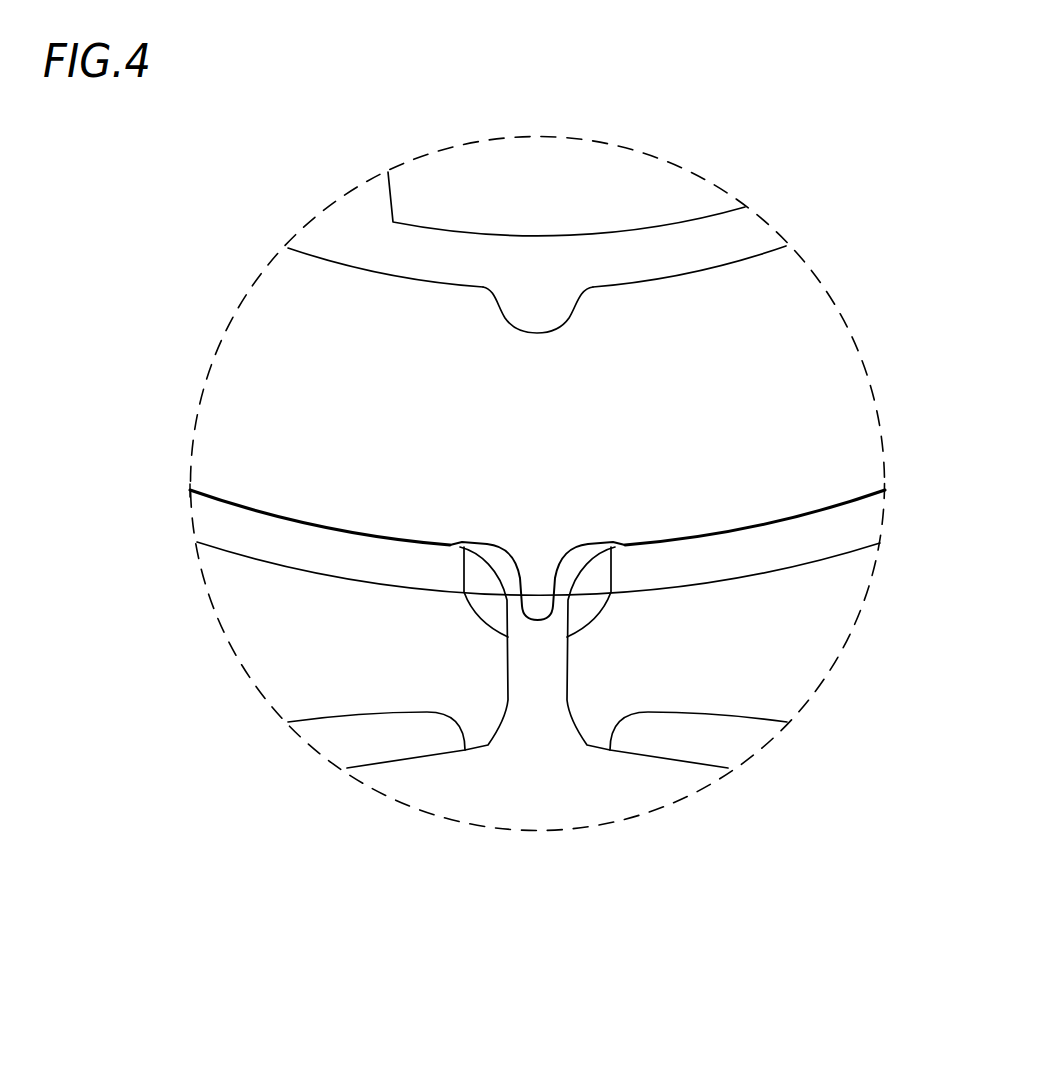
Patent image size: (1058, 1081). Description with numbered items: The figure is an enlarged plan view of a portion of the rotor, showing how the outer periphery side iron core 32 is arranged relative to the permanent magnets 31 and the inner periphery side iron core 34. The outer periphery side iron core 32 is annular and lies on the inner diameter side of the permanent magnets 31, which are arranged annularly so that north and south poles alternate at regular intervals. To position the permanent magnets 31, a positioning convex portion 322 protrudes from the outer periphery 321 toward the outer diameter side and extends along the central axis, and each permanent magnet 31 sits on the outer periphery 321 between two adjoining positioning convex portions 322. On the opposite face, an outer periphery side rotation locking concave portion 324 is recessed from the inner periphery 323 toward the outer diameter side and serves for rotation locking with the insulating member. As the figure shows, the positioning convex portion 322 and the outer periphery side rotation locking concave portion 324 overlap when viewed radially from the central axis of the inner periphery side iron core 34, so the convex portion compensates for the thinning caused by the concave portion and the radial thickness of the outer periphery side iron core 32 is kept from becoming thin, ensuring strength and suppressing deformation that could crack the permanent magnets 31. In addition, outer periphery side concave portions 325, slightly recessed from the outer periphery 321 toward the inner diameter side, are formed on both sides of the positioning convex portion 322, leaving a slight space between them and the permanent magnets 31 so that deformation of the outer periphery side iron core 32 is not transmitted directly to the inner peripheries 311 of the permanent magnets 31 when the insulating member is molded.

The permanent magnet 31 is at (579, 700).
The inner periphery of permanent magnet 311 is at (665, 543).
The outer periphery side iron core 32 is at (526, 592).
The outer periphery 321 is at (347, 533).
The positioning convex portion 322 is at (535, 623).
The inner periphery 323 is at (388, 273).
The outer periphery side rotation locking concave portion 324 is at (555, 336).
The outer periphery side concave portion 325 is at (481, 547).
The inner periphery side iron core 34 is at (592, 193).